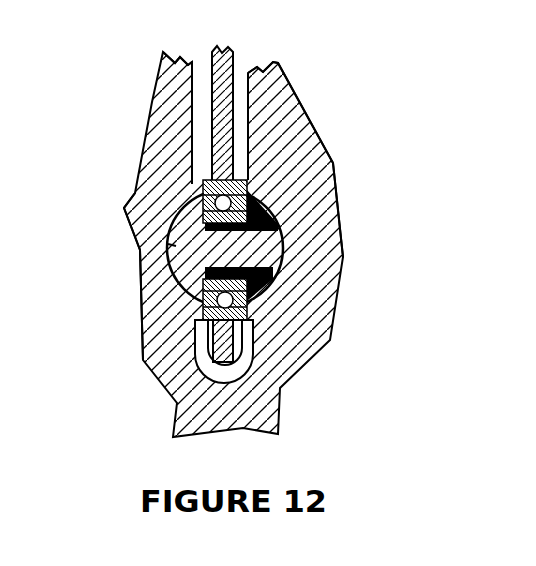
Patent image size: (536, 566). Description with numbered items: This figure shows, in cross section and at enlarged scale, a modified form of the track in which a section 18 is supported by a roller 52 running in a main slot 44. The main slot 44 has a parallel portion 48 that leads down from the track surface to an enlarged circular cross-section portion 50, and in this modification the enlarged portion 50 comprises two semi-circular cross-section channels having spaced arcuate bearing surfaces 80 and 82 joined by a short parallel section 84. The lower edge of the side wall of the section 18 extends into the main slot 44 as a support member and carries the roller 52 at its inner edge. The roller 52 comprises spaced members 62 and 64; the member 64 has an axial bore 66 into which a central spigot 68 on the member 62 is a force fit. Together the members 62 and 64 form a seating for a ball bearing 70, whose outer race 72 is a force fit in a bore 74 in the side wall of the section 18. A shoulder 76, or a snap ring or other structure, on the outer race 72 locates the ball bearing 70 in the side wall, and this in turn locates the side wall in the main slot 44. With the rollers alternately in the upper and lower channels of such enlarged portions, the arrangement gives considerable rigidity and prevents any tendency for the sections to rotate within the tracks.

The section 18 is at (233, 88).
The main slot 44 is at (203, 127).
The parallel portion 48 is at (250, 105).
The outer race 72 is at (307, 139).
The bore 74 is at (212, 150).
The shoulder 76 is at (233, 167).
The arcuate bearing surface 80 is at (124, 208).
The enlarged circular cross-section portion 50 is at (283, 207).
The member 64 is at (292, 212).
The central spigot 68 is at (262, 250).
The axial bore 66 is at (275, 277).
The arcuate bearing surface 82 is at (252, 318).
The short parallel section 84 is at (168, 244).
The member 62 is at (185, 253).
The roller 52 is at (115, 305).
The ball bearing 70 is at (196, 345).